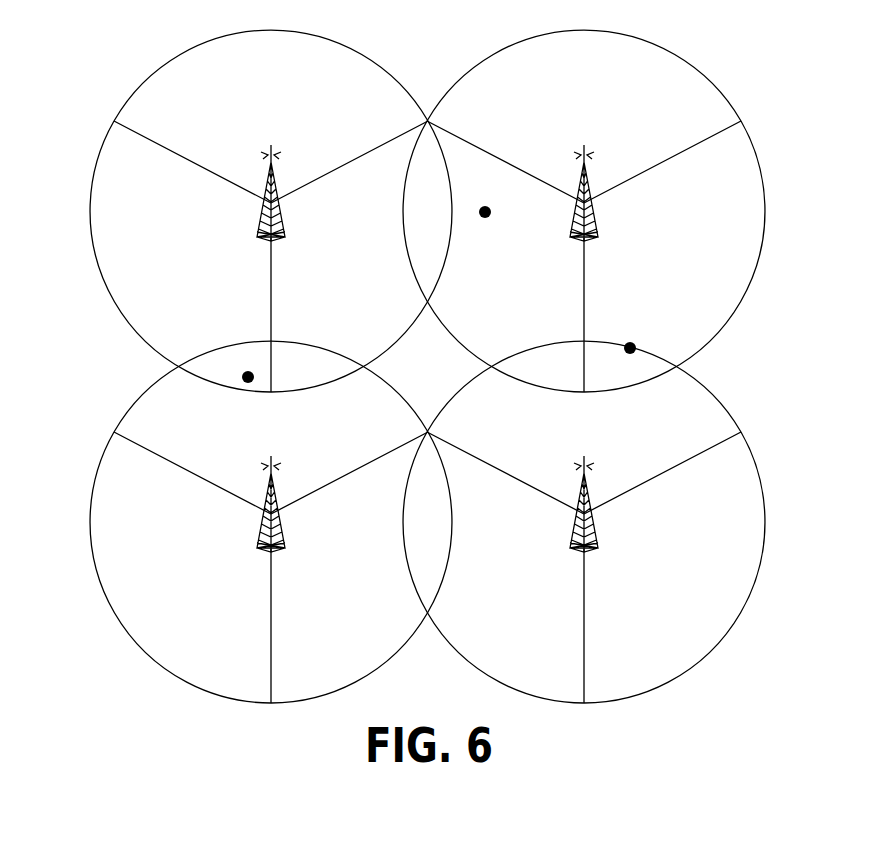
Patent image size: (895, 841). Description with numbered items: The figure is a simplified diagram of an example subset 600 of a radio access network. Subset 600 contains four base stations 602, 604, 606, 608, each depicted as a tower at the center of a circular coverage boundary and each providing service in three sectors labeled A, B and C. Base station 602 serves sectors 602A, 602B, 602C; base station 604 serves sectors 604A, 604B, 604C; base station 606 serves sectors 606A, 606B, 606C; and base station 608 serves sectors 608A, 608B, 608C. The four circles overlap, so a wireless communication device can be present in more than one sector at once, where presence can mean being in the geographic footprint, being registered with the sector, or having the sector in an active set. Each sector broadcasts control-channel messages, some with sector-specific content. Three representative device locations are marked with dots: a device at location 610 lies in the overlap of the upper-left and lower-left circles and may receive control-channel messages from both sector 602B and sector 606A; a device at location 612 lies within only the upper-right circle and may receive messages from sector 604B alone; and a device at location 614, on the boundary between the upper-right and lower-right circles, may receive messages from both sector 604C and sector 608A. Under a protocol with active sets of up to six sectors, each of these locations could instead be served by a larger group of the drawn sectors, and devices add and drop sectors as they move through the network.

The subset of RAN 600 is at (786, 93).
The base station 602 is at (308, 265).
The sector of base station 602 602A is at (250, 96).
The sector of base station 602 602B is at (164, 295).
The sector of base station 602 602C is at (334, 295).
The base station 604 is at (621, 265).
The sector of base station 604 604A is at (564, 96).
The sector of base station 604 604B is at (478, 295).
The sector of base station 604 604C is at (649, 295).
The base station 606 is at (308, 577).
The sector of base station 606 606A is at (250, 420).
The sector of base station 606 606B is at (163, 620).
The sector of base station 606 606C is at (332, 620).
The base station 608 is at (621, 577).
The sector of base station 608 608A is at (564, 420).
The sector of base station 608 608B is at (475, 620).
The sector of base station 608 608C is at (647, 620).
The location 610 is at (249, 364).
The location 612 is at (485, 200).
The location 614 is at (631, 336).